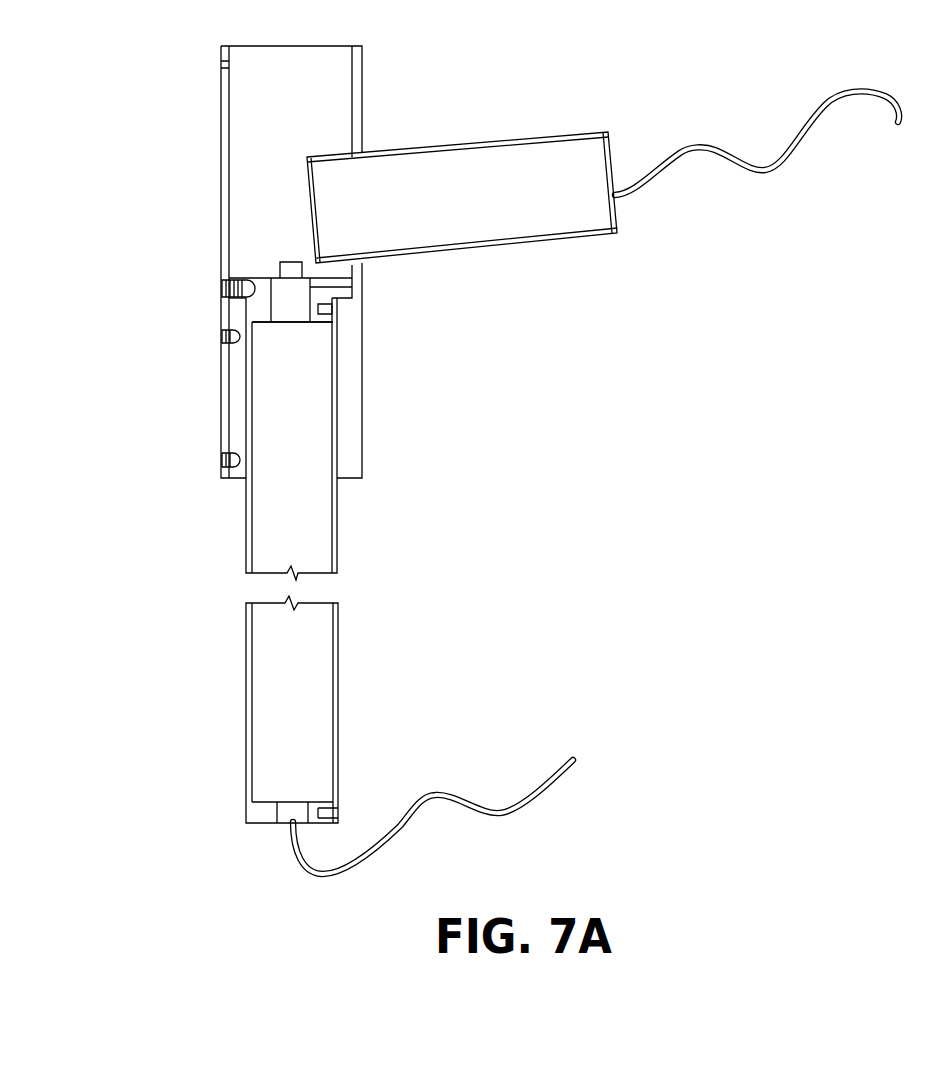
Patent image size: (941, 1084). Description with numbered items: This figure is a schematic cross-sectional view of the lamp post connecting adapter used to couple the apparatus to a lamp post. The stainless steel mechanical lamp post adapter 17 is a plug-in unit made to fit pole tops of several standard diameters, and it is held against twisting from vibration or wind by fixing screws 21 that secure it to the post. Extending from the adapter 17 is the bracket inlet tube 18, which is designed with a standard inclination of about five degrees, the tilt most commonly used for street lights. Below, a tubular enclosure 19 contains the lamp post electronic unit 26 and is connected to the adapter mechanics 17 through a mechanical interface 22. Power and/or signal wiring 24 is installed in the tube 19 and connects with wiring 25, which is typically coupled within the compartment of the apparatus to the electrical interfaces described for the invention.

The lamp post adapter 17 is at (228, 150).
The bracket inlet tube 18 is at (520, 138).
The tubular enclosure 19 is at (336, 658).
The fixing screws 21 is at (238, 387).
The mechanical interface 22 is at (352, 288).
The wiring 24 is at (550, 770).
The wiring 25 is at (853, 88).
The lamp post electronic unit 26 is at (297, 765).